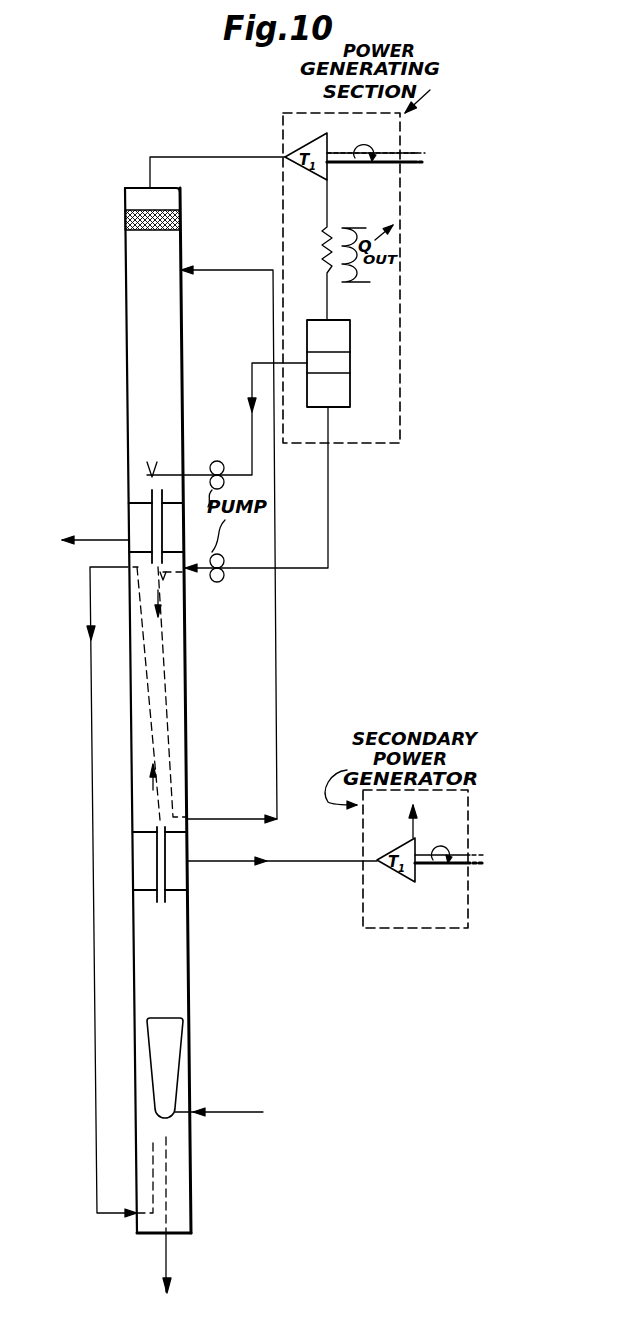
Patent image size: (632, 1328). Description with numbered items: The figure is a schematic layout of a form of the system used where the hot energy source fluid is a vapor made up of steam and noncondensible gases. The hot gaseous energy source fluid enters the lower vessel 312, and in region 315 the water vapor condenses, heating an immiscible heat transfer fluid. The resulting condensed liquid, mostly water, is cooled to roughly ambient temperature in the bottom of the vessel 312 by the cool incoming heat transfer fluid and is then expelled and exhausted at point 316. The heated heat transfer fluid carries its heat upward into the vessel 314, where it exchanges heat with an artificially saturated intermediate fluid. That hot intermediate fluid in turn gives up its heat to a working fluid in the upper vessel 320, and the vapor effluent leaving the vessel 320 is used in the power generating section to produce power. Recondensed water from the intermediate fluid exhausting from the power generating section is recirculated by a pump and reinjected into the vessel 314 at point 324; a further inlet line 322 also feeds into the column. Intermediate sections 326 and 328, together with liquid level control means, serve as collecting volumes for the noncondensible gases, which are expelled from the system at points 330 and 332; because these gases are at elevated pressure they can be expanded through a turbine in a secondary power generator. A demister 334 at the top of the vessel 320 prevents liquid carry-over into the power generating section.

The vessel 312 is at (190, 965).
The vessel 314 is at (188, 731).
The region 315 is at (168, 1040).
The point 316 is at (163, 1262).
The vessel 320 is at (127, 370).
The inlet conduit 322 is at (160, 475).
The point 324 is at (187, 575).
The intermediate section 326 is at (133, 860).
The intermediate section 328 is at (135, 513).
The point 330 is at (240, 867).
The point 332 is at (90, 540).
The demister 334 is at (125, 230).